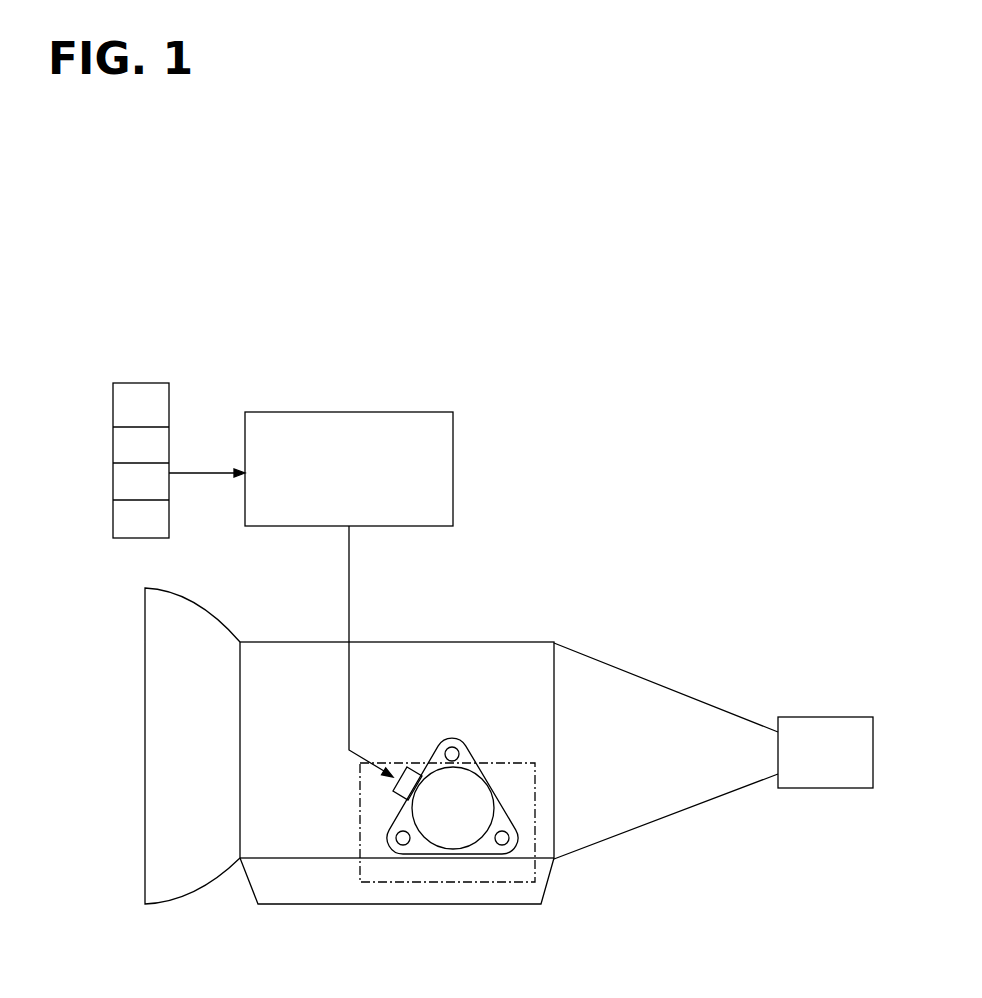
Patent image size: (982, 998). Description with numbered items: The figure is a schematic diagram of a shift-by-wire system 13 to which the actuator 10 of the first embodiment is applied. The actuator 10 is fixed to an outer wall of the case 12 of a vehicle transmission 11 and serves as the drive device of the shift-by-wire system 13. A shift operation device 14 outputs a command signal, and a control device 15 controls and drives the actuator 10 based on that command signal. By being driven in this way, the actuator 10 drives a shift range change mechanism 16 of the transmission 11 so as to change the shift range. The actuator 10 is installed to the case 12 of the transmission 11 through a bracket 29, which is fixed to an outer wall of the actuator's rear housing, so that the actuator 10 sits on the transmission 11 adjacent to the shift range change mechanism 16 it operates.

The actuator 10 is at (454, 856).
The vehicle transmission 11 is at (265, 641).
The case 12 is at (514, 655).
The shift-by-wire system 13 is at (254, 376).
The shift operation device 14 is at (135, 382).
The control device 15 is at (433, 412).
The shift range change mechanism 16 is at (360, 868).
The bracket 29 is at (428, 765).